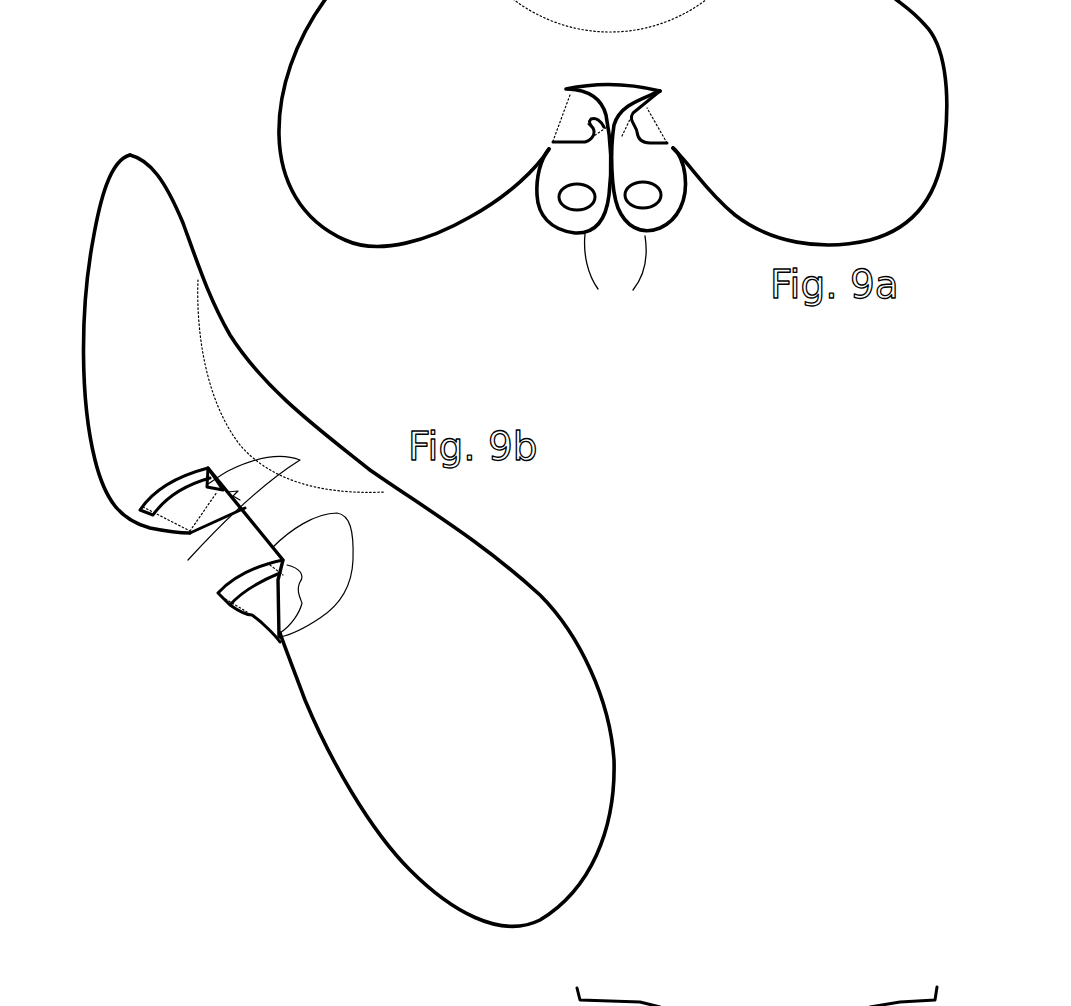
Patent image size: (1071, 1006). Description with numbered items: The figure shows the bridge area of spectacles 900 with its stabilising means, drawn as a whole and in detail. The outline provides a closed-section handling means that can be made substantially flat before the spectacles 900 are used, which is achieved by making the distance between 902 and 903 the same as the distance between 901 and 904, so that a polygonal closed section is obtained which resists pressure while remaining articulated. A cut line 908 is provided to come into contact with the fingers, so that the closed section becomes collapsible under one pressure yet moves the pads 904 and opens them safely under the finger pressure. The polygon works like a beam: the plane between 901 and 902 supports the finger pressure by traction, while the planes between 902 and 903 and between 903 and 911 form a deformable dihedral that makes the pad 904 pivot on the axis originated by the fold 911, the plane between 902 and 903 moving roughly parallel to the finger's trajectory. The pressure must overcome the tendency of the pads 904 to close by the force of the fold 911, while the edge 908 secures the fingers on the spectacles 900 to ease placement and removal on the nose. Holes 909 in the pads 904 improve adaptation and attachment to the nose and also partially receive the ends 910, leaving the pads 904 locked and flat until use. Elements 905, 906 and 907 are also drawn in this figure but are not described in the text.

In FIG. 9B, the spectacles 900 is at (114, 508).
In FIG. 9A, the fold line 901 is at (567, 96).
In FIG. 9B, the fold line 901 is at (258, 617).
In FIG. 9A, the fold line 902 is at (590, 115).
In FIG. 9B, the fold line 902 is at (240, 603).
In FIG. 9A, the fold line 903 is at (597, 133).
In FIG. 9B, the fold line 903 is at (224, 590).
In FIG. 9A, the pads 904 is at (616, 265).
In FIG. 9B, the pads 904 is at (245, 573).
In FIG. 9A, the edge 905 is at (549, 148).
In FIG. 9A, the lobe 906 is at (577, 170).
In FIG. 9A, the flap 907 is at (598, 119).
In FIG. 9A, the cut line 908 is at (573, 97).
In FIG. 9A, the holes 909 is at (564, 210).
In FIG. 9A, the ends 910 is at (572, 233).
In FIG. 9A, the fold 911 is at (560, 137).
In FIG. 9B, the fold 911 is at (274, 630).